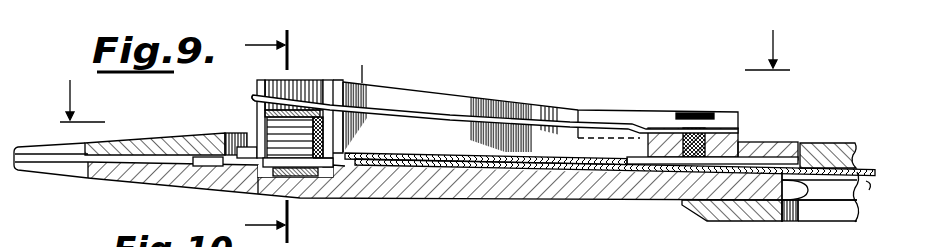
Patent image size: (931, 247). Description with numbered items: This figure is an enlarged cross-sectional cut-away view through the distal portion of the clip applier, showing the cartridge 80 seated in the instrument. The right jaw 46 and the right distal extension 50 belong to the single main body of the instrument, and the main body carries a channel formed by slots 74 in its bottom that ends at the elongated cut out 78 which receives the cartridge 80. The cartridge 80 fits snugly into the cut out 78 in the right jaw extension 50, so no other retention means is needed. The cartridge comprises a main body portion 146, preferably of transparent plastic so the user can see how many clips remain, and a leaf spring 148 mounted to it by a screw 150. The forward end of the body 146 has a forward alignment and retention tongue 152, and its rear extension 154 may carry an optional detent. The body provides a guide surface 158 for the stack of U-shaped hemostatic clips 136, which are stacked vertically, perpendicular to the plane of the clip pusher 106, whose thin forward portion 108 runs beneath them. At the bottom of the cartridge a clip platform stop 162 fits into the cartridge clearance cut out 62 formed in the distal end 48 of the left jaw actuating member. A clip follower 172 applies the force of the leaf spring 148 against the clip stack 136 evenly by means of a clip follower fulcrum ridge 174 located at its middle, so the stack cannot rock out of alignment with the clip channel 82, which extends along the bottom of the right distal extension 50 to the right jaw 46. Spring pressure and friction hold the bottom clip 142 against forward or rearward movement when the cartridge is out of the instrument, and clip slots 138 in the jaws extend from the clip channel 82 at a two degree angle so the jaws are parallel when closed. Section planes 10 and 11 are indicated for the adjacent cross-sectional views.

The section line 10- 10 is at (417, 76).
The section line 11- 11 is at (280, 136).
The right jaw 46 is at (25, 172).
The distal end 48 is at (440, 192).
The right distal extension 50 is at (143, 133).
The cartridge clearance cut out 62 is at (247, 199).
The slots 74 is at (845, 205).
The elongated cut out 78 is at (240, 147).
The cartridge 80 is at (465, 82).
The clip channel 82 is at (162, 158).
The clip pusher 106 is at (885, 195).
The thin forward portion 108 is at (386, 166).
The hemostatic clips 136 is at (329, 131).
The clip slots 138 is at (58, 163).
The bottom clip 142 is at (320, 168).
The main body portion 146 is at (512, 104).
The leaf spring 148 is at (362, 65).
The screw 150 is at (703, 114).
The forward alignment and retention tongue 152 is at (183, 180).
The rear extension 154 is at (766, 143).
The guide surface 158 is at (283, 84).
The clip platform stop 162 is at (288, 178).
The clip follower 172 is at (253, 98).
The clip follower fulcrum ridge 174 is at (312, 100).